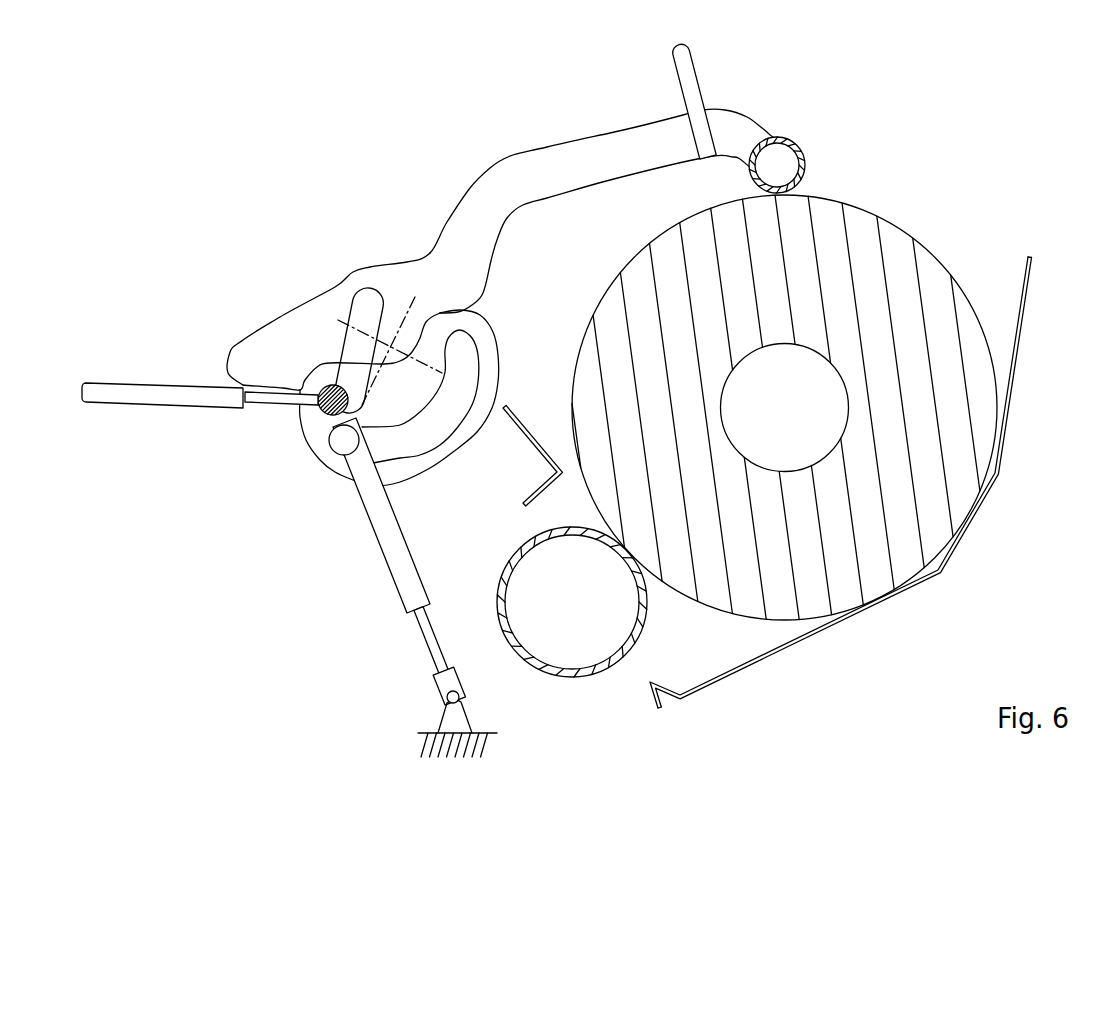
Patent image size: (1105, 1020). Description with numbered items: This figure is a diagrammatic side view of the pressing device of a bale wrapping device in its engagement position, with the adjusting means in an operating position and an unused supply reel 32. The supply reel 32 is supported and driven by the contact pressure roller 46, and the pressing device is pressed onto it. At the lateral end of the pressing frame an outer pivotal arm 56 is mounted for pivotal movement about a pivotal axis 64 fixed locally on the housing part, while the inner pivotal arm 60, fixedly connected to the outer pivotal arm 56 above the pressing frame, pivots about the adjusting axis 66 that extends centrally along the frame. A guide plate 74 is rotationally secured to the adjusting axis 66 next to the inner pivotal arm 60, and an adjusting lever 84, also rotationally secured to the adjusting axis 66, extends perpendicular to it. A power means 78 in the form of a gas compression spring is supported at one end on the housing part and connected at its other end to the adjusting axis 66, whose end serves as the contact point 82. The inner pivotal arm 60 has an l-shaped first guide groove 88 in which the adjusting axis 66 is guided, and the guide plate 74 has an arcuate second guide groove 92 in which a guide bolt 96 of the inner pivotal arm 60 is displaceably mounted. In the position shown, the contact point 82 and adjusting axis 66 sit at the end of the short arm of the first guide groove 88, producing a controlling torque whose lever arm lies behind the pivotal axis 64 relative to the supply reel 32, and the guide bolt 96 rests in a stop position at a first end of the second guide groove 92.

The supply reel 32 is at (905, 265).
The contact pressure roller 46 is at (573, 673).
The outer pivotal arm 56 is at (300, 305).
The inner pivotal arm 60 is at (635, 138).
The pivotal axis 64 is at (420, 363).
The adjusting axis 66 is at (266, 460).
The guide plate 74 is at (399, 317).
The power means 78 is at (410, 587).
The contact point 82 is at (328, 412).
The adjusting lever 84 is at (155, 395).
The first guide groove 88 is at (368, 303).
The second guide groove 92 is at (460, 367).
The guide bolt 96 is at (345, 445).